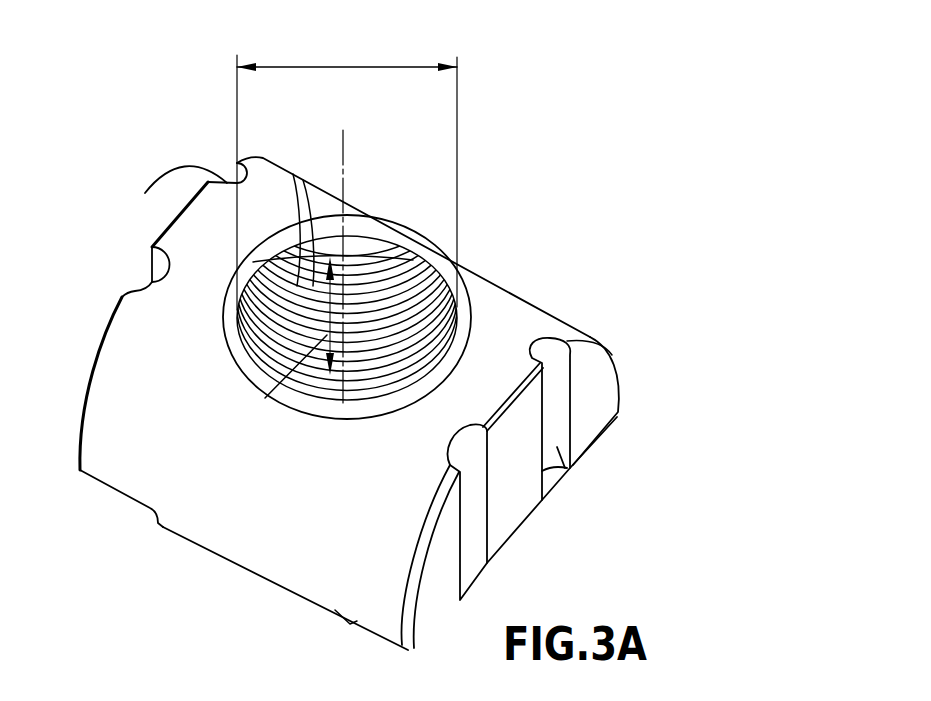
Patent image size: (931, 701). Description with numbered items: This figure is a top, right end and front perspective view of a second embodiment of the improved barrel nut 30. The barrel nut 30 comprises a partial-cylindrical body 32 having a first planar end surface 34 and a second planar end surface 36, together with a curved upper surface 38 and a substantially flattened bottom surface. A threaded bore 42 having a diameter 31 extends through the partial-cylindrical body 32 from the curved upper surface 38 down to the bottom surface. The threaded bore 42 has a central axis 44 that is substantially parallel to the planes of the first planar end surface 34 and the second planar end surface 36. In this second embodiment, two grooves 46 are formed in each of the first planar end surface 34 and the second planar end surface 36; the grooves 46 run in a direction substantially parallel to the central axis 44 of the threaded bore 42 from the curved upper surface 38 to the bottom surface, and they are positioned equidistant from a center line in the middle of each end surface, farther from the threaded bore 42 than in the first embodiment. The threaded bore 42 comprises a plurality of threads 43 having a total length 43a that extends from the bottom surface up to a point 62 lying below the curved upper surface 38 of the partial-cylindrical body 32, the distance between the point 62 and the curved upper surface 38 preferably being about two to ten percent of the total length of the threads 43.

The barrel nut 30 is at (116, 190).
The diameter 31 is at (393, 63).
The partial-cylindrical body 32 is at (392, 568).
The first planar end surface 34 is at (93, 356).
The second planar end surface 36 is at (600, 400).
The curved upper surface 38 is at (133, 443).
The threaded bore 42 is at (357, 400).
The threads 43 is at (296, 178).
The total length 43a is at (265, 398).
The central axis 44 is at (342, 155).
The grooves 46 is at (147, 285).
The point 62 is at (381, 240).